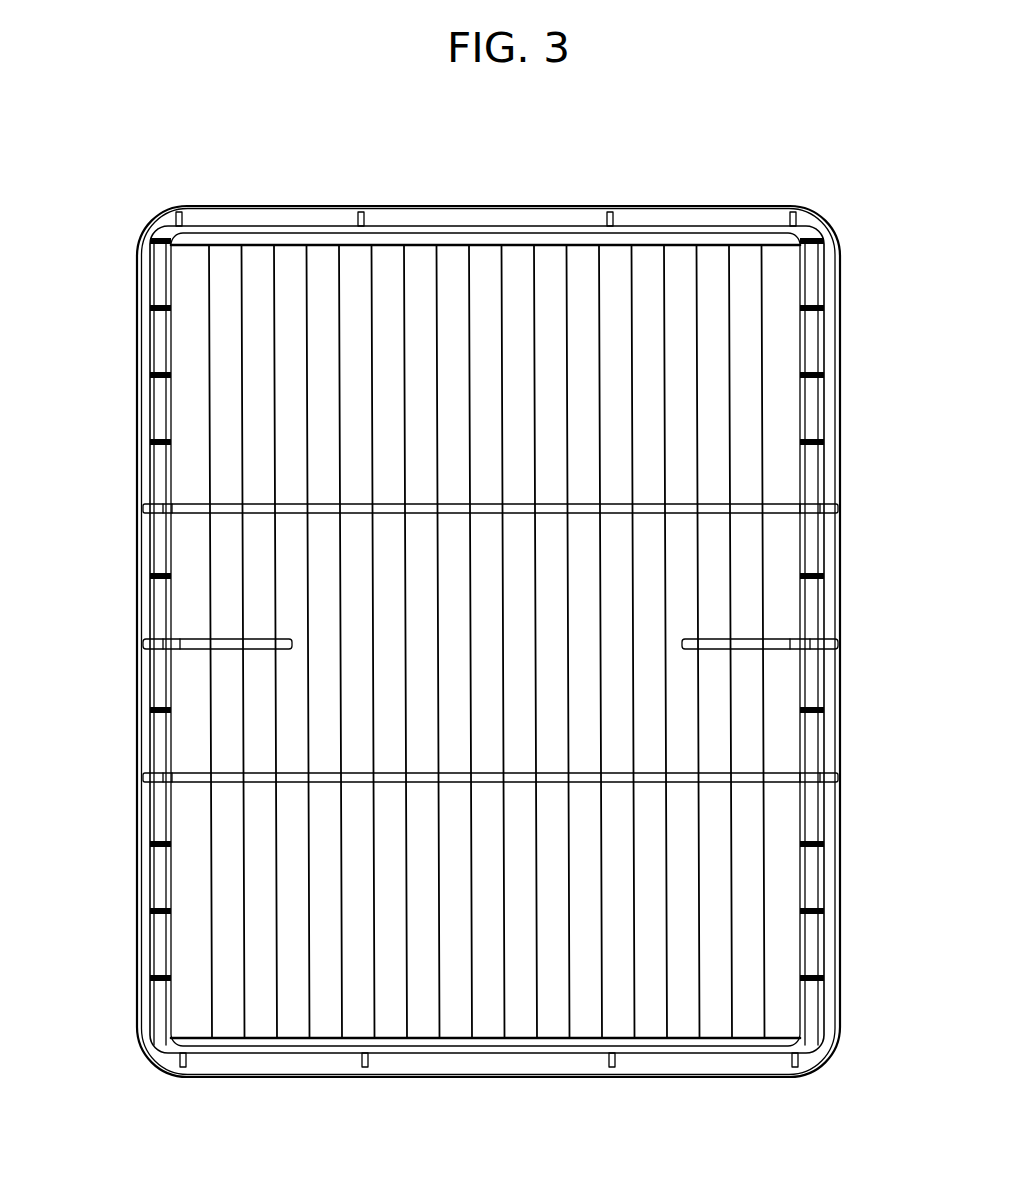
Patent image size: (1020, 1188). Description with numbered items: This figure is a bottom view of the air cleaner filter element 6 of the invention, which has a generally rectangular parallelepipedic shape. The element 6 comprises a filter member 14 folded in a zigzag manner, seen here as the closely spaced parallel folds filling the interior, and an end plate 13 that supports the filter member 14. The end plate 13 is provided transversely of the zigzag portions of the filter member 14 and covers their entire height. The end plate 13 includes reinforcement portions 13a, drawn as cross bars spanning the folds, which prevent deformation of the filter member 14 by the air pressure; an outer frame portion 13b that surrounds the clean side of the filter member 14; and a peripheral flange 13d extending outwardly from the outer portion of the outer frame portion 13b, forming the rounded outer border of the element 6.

The element 6 is at (482, 277).
The end plate 13 is at (838, 378).
The reinforcement portions 13a is at (197, 503).
The outer frame portion 13b is at (415, 240).
The peripheral flange 13d is at (713, 220).
The filter member 14 is at (260, 277).